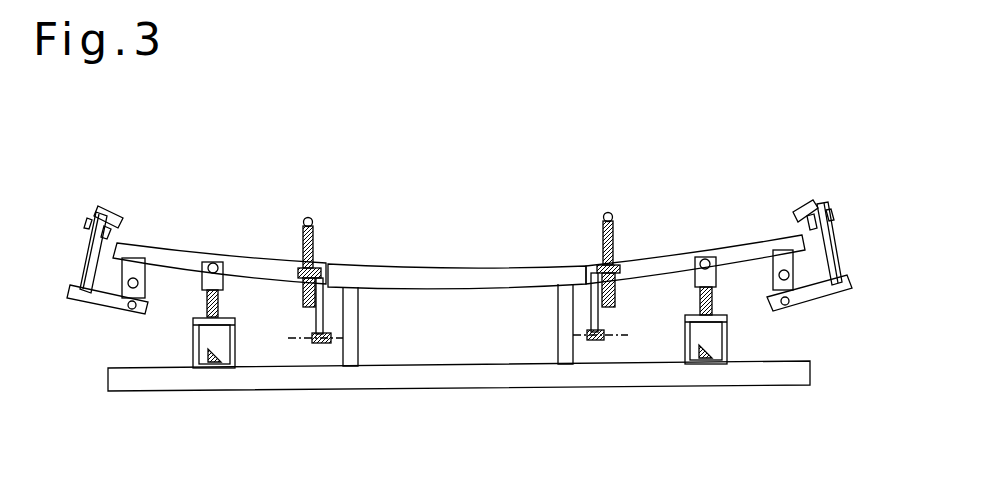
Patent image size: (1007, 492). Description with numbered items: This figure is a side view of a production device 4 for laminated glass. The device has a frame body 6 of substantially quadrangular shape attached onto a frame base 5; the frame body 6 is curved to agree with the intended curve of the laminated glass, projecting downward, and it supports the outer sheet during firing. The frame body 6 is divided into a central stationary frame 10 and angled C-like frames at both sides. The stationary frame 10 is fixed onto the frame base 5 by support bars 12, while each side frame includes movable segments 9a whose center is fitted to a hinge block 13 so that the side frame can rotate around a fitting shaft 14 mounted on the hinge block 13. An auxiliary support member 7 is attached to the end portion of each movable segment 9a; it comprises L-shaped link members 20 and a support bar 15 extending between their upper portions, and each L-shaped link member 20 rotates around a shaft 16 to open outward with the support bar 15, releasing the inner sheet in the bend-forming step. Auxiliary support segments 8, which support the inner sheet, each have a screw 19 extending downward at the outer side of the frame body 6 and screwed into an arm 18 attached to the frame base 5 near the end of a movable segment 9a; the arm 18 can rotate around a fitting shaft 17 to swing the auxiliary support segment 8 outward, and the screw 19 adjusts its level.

The production device for laminated glass 4 is at (695, 162).
The frame base 5 is at (154, 386).
The frame body 6 is at (554, 256).
The auxiliary support member 7 is at (79, 243).
The auxiliary support segment 8 is at (340, 231).
The movable segment 9a is at (268, 270).
The stationary frame 10 is at (500, 268).
The support bar 12 is at (358, 320).
The hinge block 13 is at (193, 347).
The fitting shaft 14 is at (213, 262).
The support bar 15 is at (120, 216).
The shaft 16 is at (130, 312).
The fitting shaft 17 is at (296, 346).
The arm 18 is at (316, 326).
The screw 19 is at (314, 235).
The L-shaped link member 20 is at (80, 268).